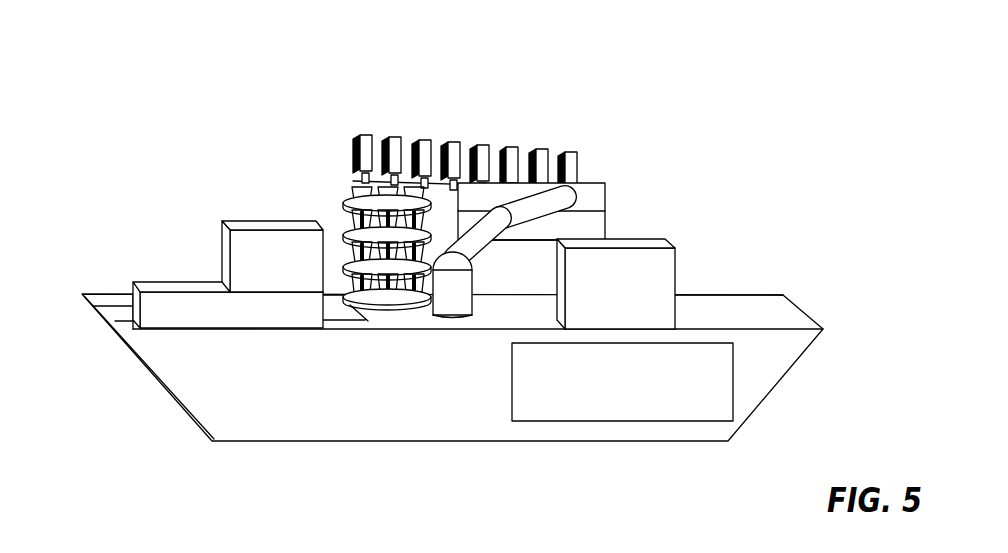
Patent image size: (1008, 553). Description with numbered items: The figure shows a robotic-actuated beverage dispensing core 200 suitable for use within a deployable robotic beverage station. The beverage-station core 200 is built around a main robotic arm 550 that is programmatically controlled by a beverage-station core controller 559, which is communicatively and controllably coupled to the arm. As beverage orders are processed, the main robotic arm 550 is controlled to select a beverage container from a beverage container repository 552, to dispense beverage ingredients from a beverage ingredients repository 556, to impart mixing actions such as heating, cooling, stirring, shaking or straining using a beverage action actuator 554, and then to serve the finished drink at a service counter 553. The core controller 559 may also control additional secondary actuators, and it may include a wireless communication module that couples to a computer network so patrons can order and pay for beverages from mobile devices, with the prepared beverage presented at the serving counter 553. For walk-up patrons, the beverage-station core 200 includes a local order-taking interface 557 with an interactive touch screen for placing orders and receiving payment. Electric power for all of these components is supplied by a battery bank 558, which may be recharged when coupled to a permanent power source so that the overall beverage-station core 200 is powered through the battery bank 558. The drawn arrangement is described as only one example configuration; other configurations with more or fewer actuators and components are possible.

The beverage-station core 200 is at (185, 451).
The main robotic arm 550 is at (457, 318).
The beverage container repository 552 is at (345, 190).
The service counter 553 is at (153, 280).
The beverage action actuator 554 is at (648, 238).
The beverage ingredients repository 556 is at (542, 127).
The local order-taking interface 557 is at (228, 218).
The battery bank 558 is at (622, 382).
The beverage-station core controller 559 is at (600, 180).